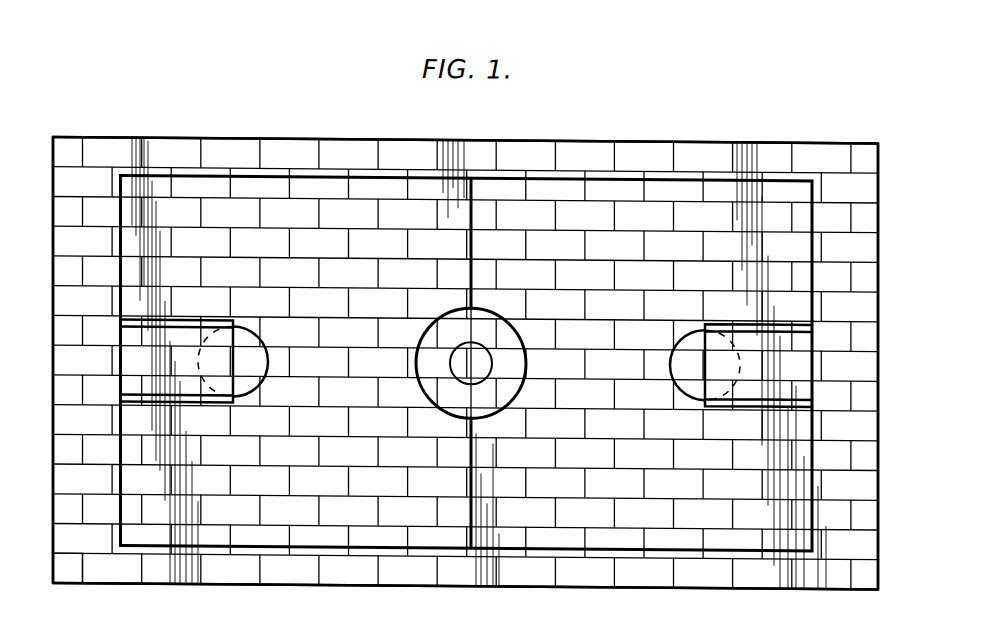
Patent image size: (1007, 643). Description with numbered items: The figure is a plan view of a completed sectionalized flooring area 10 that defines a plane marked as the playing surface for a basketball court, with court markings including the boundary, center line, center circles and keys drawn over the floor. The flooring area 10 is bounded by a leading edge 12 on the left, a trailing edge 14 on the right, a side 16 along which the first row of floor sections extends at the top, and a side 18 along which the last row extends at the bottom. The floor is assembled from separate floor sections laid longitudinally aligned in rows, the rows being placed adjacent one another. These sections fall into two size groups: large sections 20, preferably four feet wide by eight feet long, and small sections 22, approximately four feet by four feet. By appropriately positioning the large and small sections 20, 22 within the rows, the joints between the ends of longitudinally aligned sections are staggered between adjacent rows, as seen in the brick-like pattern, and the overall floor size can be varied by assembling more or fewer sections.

The sectionalized flooring area 10 is at (650, 119).
The leading edge 12 is at (53, 172).
The trailing edge 14 is at (879, 175).
The side 16 is at (358, 146).
The side 18 is at (413, 585).
The large sections 20 is at (188, 142).
The small sections 22 is at (67, 575).